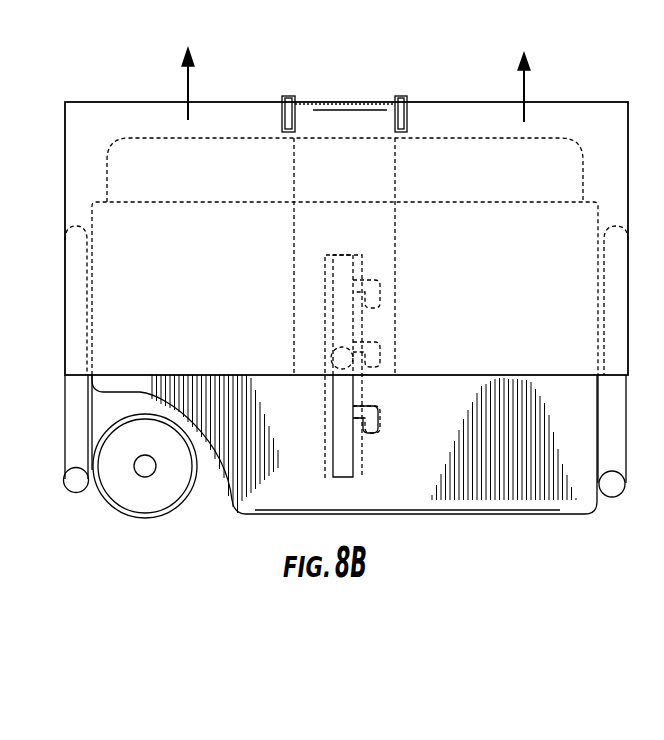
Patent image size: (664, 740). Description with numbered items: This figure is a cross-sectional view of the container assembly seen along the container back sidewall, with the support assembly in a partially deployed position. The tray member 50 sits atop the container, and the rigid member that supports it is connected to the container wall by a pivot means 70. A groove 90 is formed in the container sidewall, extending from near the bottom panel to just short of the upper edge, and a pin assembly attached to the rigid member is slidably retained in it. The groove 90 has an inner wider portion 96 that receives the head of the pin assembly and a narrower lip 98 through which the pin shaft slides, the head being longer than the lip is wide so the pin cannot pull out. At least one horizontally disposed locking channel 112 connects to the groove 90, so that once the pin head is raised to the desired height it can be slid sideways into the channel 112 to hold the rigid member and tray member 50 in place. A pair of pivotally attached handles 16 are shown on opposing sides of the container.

The tray member 50 is at (173, 118).
The pivot means 70 is at (407, 117).
The locking channel 112 is at (380, 300).
The groove 90 is at (320, 462).
The narrower lip 98 is at (348, 466).
The inner wider portion 96 is at (362, 437).
The handle 16 is at (51, 434).